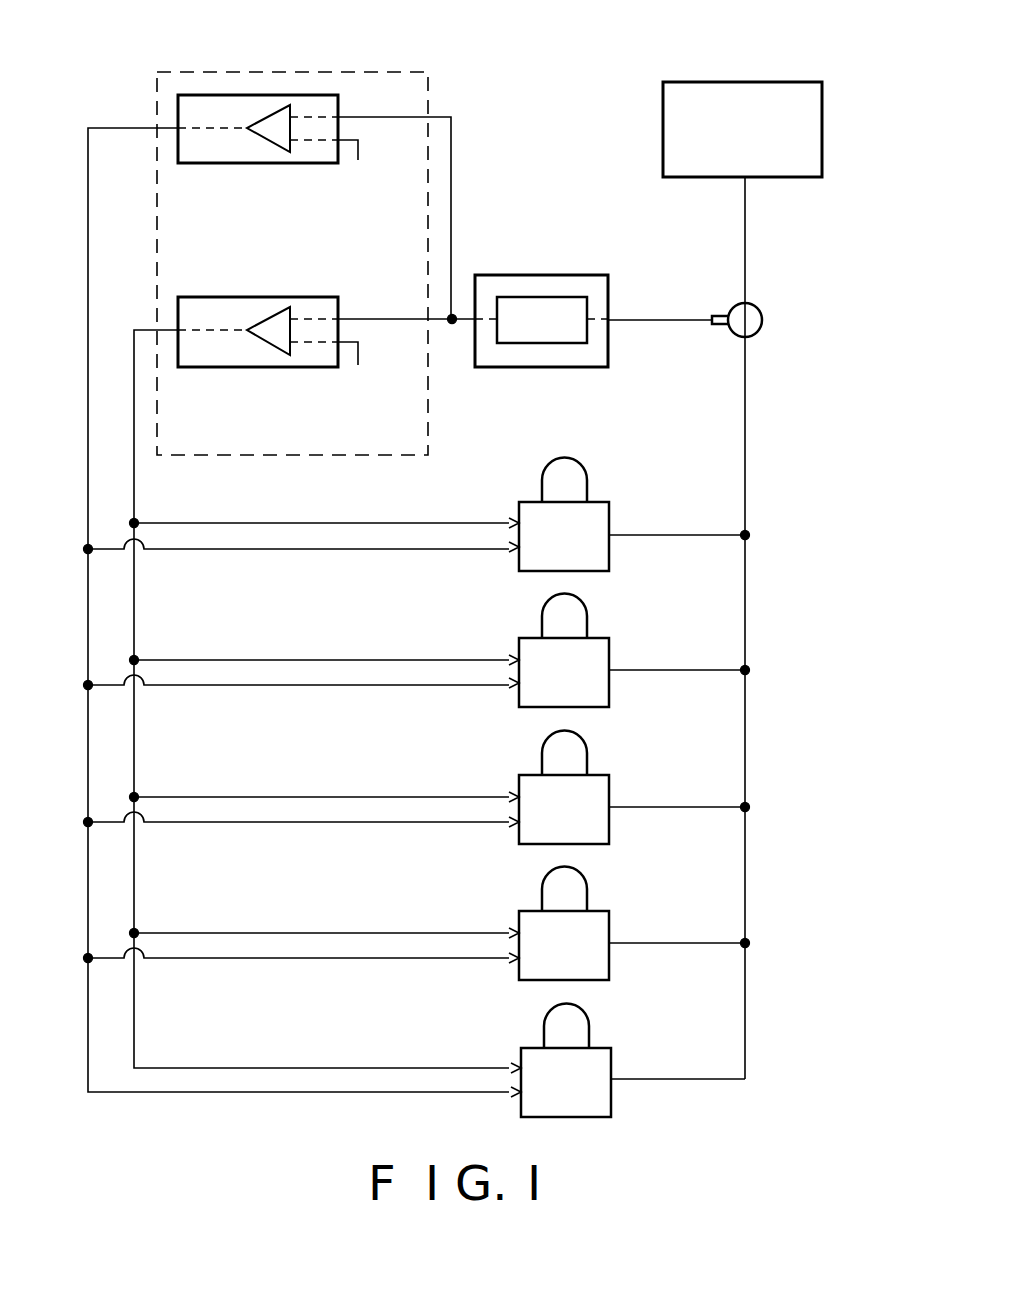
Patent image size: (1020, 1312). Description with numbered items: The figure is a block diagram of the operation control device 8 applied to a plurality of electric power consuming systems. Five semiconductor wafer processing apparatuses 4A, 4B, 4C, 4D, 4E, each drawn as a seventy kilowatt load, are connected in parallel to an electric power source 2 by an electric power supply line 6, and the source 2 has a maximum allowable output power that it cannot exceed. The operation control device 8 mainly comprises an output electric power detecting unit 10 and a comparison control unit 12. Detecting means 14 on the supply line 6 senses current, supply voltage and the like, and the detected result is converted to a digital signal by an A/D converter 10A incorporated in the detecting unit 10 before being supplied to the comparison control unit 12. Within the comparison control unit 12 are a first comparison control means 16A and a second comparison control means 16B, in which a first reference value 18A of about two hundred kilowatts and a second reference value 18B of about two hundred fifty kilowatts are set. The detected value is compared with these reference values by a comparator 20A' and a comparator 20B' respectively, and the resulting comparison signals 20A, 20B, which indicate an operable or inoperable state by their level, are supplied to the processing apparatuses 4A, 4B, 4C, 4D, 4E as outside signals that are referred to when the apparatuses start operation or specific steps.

The electric power source 2 is at (766, 82).
The semiconductor wafer processing apparatus 4A is at (545, 458).
The semiconductor wafer processing apparatus 4B is at (587, 603).
The semiconductor wafer processing apparatus 4C is at (587, 742).
The semiconductor wafer processing apparatus 4D is at (587, 883).
The semiconductor wafer processing apparatus 4E is at (589, 1020).
The electric power supply line 6 is at (748, 412).
The operation control device 8 is at (490, 118).
The output electric power detecting unit 10 is at (583, 292).
The A/D converter 10A is at (587, 303).
The comparison control unit 12 is at (235, 72).
The detecting means 14 is at (762, 313).
The first comparison control means 16A is at (291, 377).
The second comparison control means 16B is at (271, 131).
The first reference value 18A is at (353, 385).
The second reference value 18B is at (363, 183).
The comparison signal 20A is at (259, 306).
The comparison signal 20B is at (252, 155).
The comparator 20A' is at (320, 699).
The comparator 20B' is at (297, 610).